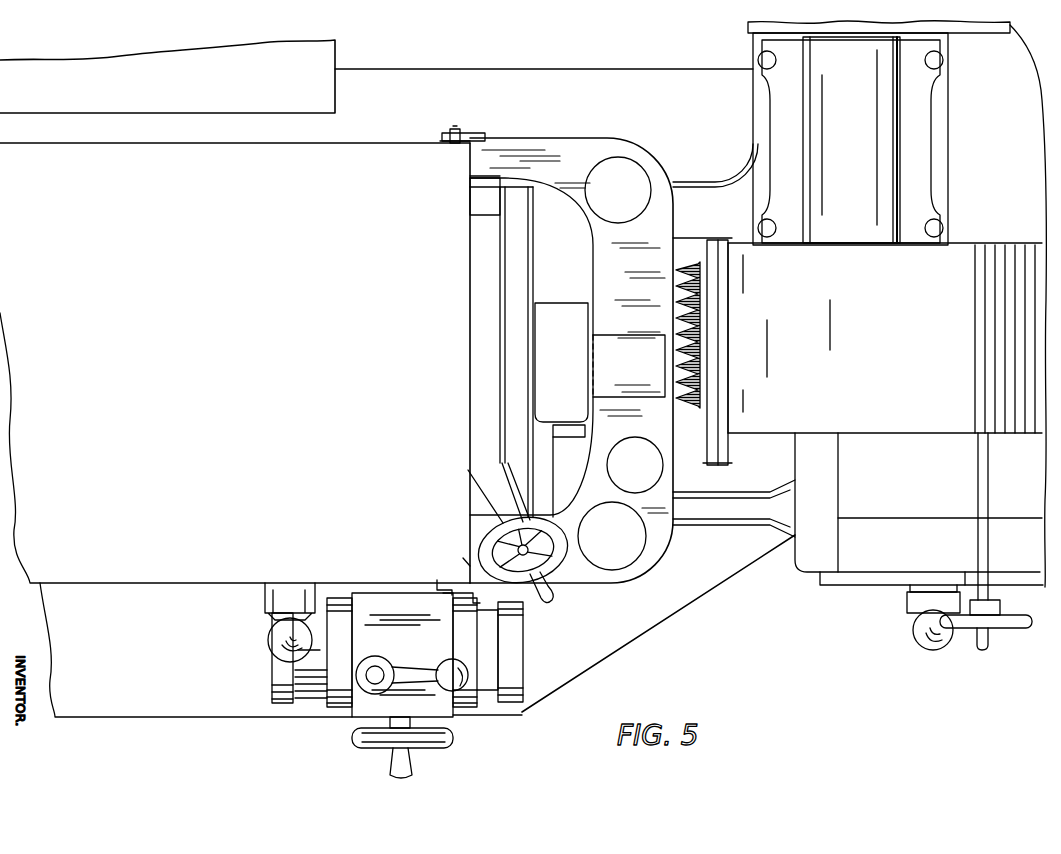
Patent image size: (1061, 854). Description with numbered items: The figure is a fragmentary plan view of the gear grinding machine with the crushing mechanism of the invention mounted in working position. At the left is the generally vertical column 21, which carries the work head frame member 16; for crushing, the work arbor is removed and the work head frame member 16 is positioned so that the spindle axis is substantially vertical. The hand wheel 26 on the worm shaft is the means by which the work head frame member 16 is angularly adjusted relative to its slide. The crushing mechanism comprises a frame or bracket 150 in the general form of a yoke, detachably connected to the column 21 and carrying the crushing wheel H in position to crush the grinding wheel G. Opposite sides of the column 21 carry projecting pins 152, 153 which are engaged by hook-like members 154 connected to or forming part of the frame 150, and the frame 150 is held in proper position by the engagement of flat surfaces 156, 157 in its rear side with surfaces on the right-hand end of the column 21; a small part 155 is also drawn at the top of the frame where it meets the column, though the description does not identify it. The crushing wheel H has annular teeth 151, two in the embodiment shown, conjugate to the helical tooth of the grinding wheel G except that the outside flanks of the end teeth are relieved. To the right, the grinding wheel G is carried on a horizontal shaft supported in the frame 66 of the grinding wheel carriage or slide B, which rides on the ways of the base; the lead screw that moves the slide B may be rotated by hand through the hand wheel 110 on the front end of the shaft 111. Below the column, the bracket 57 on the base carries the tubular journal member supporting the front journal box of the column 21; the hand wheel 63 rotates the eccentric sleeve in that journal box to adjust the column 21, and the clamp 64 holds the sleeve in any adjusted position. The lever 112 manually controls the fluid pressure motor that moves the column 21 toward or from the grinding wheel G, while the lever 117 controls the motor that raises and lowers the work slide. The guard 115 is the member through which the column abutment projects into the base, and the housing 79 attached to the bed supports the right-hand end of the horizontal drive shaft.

The column 21 is at (366, 160).
The frame or bracket 150 is at (590, 112).
The clip 155 is at (466, 133).
The projecting pin 153 is at (437, 147).
The flat surface 157 is at (470, 168).
The work head frame member 16 is at (540, 297).
The annular teeth 151 is at (673, 330).
The crushing wheel H is at (677, 345).
The grinding wheel G is at (710, 330).
The housing 79 is at (742, 158).
The frame 66 is at (972, 240).
The grinding wheel carriage or slide B is at (884, 434).
The shaft 111 is at (985, 556).
The hand wheel 110 is at (1002, 630).
The lever 117 is at (915, 629).
The guard 115 is at (695, 522).
The hand wheel 26 is at (500, 543).
The flat surface 156 is at (463, 563).
The projecting pin 152 is at (447, 580).
The hook-like members 154 is at (441, 600).
The bracket 57 is at (280, 707).
The lever 112 is at (268, 642).
The hand wheel 63 is at (352, 740).
The clamp 64 is at (462, 690).